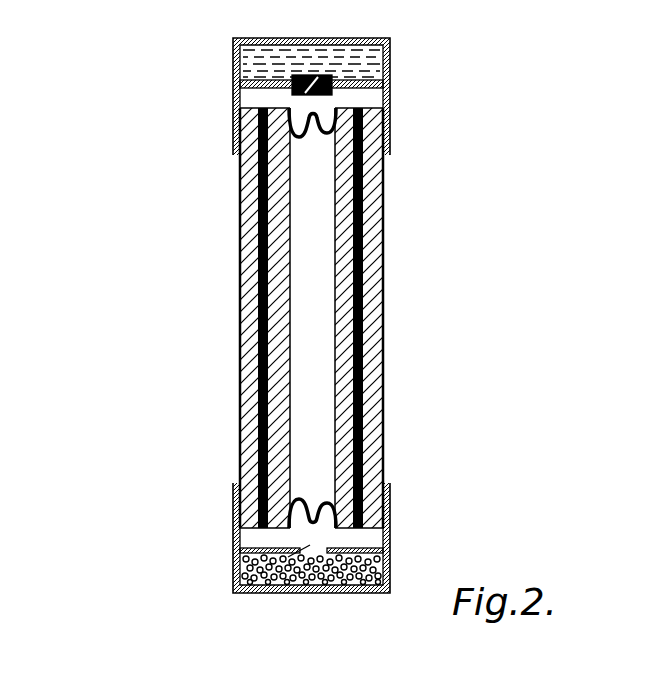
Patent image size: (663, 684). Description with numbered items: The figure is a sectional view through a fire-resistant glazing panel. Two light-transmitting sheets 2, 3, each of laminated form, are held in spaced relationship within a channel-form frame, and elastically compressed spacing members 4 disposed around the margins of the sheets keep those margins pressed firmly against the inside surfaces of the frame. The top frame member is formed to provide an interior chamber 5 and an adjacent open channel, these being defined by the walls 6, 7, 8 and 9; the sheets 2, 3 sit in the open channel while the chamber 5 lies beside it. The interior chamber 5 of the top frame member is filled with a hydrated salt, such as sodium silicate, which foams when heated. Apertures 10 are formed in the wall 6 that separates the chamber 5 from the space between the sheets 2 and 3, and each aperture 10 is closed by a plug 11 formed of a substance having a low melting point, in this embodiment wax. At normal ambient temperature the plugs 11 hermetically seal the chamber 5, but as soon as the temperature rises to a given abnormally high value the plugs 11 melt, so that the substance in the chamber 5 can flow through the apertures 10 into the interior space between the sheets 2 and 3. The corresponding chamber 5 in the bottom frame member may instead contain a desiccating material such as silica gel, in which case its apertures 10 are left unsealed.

The light-transmitting sheet 2 is at (240, 285).
The light-transmitting sheet 3 is at (384, 290).
The spacing member 4 is at (303, 137).
The interior chamber 5 is at (360, 70).
The wall 6 is at (292, 87).
The wall 7 is at (233, 63).
The wall 8 is at (307, 38).
The wall 9 is at (390, 93).
The aperture 10 is at (345, 45).
The plug 11 is at (367, 38).